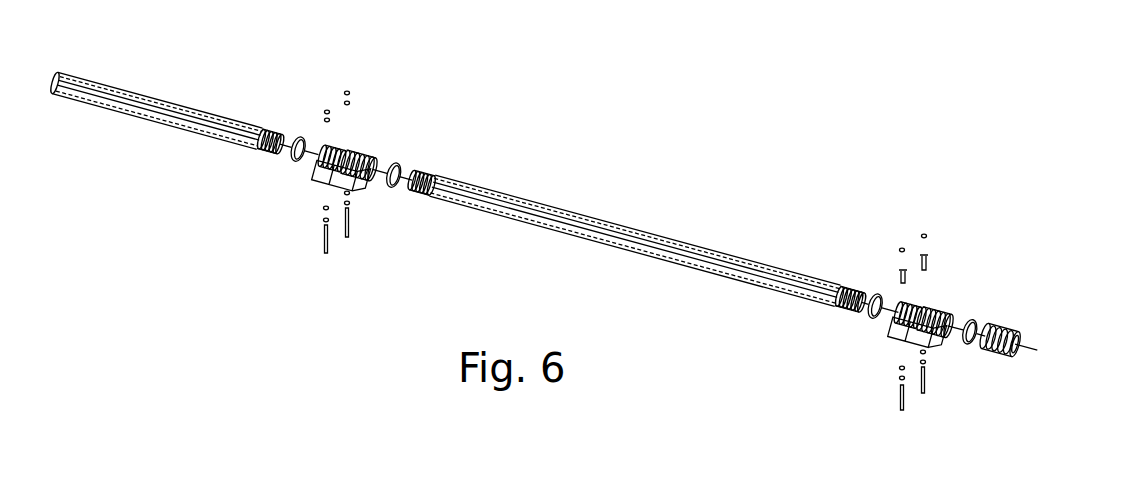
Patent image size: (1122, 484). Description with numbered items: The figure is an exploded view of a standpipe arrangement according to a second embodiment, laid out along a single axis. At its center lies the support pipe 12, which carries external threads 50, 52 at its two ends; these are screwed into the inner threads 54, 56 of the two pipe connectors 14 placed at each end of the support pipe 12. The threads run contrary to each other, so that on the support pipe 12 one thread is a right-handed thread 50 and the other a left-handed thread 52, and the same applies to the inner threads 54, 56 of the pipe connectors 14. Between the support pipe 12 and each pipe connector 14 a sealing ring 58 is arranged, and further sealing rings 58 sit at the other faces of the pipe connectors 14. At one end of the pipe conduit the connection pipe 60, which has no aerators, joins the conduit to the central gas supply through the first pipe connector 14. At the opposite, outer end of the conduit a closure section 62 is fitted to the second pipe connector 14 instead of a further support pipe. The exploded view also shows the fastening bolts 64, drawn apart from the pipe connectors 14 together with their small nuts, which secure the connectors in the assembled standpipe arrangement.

The support pipe 12 is at (636, 209).
The pipe connector 14 is at (356, 148).
The right-handed external thread 50 is at (422, 183).
The left-handed external thread 52 is at (850, 299).
The inner thread 54 is at (365, 178).
The inner thread 56 is at (893, 328).
The sealing ring 58 is at (302, 137).
The connection pipe 60 is at (270, 128).
The closure section 62 is at (1003, 325).
The fastening bolt 64 is at (318, 240).